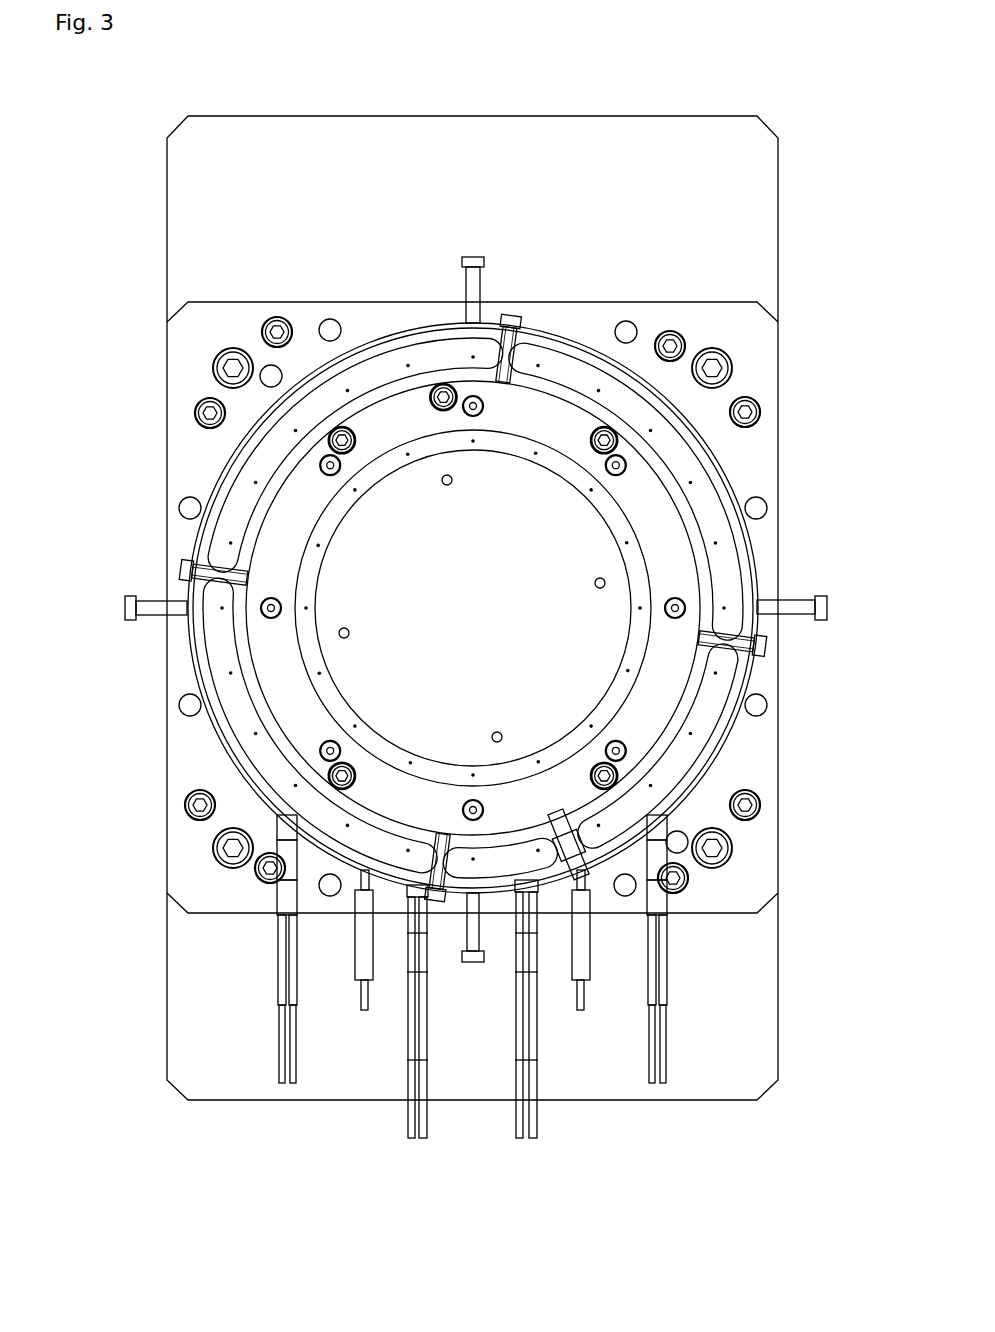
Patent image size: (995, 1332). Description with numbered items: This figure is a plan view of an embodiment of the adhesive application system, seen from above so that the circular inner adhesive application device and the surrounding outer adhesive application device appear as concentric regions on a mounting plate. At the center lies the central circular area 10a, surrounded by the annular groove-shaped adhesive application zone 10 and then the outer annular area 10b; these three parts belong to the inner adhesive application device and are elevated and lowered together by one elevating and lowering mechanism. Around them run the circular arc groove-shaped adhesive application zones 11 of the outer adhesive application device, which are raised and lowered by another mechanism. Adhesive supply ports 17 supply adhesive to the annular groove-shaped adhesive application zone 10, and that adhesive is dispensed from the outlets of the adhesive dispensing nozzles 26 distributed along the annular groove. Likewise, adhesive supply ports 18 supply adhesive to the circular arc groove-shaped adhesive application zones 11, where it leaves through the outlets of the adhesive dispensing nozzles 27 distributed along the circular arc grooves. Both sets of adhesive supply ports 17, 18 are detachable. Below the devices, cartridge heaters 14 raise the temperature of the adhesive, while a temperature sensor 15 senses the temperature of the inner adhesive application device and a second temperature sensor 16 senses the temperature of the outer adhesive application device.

The annular groove-shaped adhesive application zone 10 is at (549, 453).
The central circular area 10a is at (413, 525).
The outer annular area 10b is at (580, 425).
The circular arc groove-shaped adhesive application zones 11 is at (677, 461).
The cartridge heaters 14 is at (413, 1033).
The temperature sensor 15 is at (363, 941).
The temperature sensor 16 is at (585, 945).
The adhesive supply ports 17 is at (510, 313).
The adhesive supply ports 18 is at (473, 257).
The adhesive dispensing nozzles 26 is at (630, 545).
The adhesive dispensing nozzles 27 is at (725, 604).